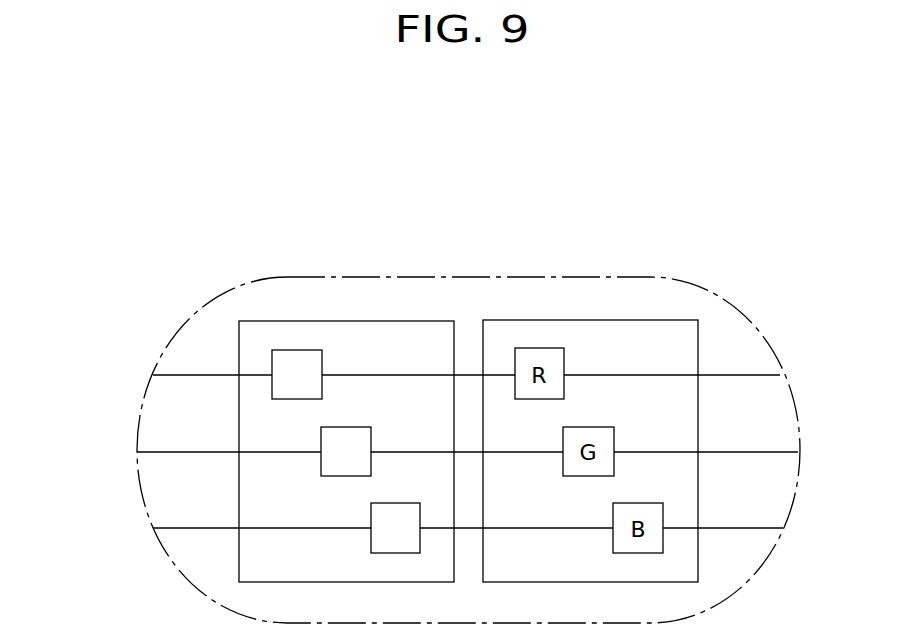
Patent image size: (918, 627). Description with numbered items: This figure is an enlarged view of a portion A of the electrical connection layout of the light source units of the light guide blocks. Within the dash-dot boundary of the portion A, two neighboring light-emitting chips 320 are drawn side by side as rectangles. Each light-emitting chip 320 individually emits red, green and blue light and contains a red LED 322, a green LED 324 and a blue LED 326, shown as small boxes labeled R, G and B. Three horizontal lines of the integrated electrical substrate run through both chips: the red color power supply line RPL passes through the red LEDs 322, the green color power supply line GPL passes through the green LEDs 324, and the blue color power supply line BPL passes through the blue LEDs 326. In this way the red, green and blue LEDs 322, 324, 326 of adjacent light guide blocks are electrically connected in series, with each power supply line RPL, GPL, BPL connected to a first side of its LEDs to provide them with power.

The light-emitting chip 320 is at (272, 208).
The red LED 322 is at (293, 350).
The green LED 324 is at (347, 427).
The blue LED 326 is at (398, 503).
The portion A is at (722, 306).
The red color power supply line RPL is at (170, 375).
The green color power supply line GPL is at (170, 452).
The blue color power supply line BPL is at (170, 528).